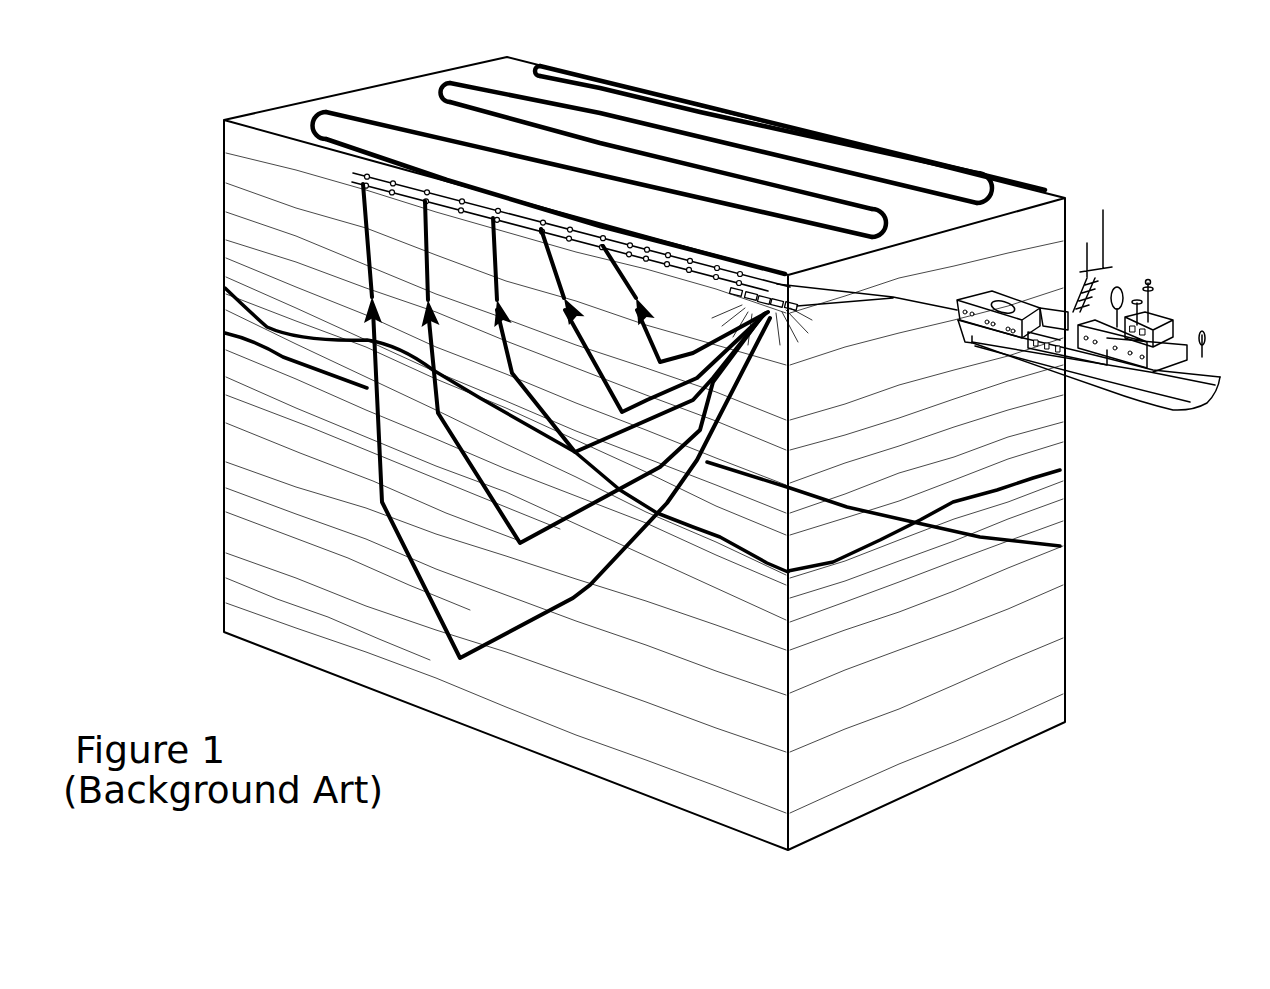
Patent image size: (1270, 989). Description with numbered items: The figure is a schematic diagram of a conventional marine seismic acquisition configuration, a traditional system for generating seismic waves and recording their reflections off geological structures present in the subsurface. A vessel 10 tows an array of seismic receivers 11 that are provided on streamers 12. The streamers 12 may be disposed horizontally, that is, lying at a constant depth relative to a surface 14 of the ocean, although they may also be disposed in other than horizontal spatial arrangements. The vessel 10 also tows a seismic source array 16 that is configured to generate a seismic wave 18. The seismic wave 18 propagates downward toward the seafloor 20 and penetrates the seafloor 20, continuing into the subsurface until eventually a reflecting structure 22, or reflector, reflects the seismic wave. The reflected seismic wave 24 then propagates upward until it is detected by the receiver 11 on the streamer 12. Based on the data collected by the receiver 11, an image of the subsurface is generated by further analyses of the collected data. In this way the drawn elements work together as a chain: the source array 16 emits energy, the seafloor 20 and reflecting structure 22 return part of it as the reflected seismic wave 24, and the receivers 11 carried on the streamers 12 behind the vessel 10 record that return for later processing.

The vessel 10 is at (1185, 305).
The seismic receivers 11 is at (423, 200).
The streamers 12 is at (565, 207).
The surface of the ocean 14 is at (402, 96).
The seismic source array 16 is at (774, 290).
The seismic wave 18 is at (1060, 546).
The seafloor 20 is at (1019, 472).
The reflecting structure 22 is at (325, 468).
The reflected seismic wave 24 is at (226, 330).